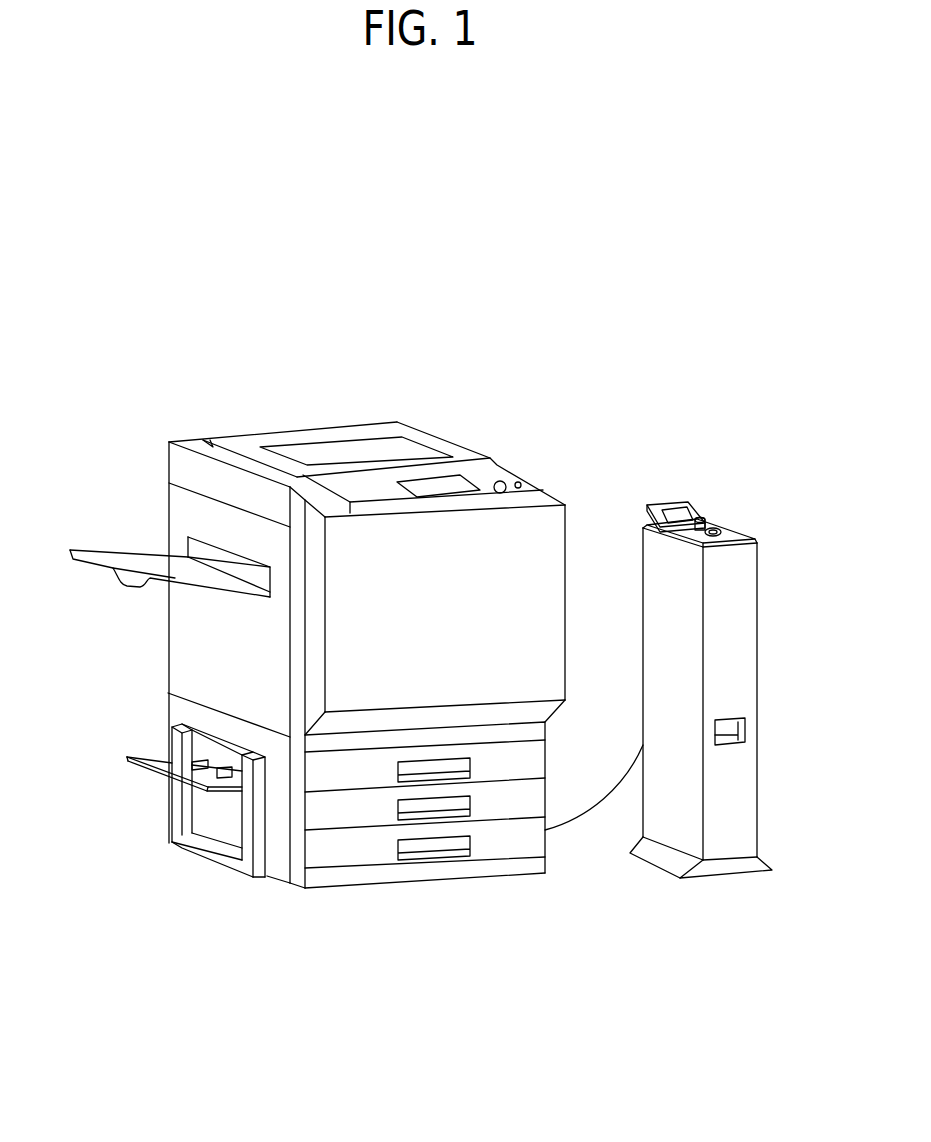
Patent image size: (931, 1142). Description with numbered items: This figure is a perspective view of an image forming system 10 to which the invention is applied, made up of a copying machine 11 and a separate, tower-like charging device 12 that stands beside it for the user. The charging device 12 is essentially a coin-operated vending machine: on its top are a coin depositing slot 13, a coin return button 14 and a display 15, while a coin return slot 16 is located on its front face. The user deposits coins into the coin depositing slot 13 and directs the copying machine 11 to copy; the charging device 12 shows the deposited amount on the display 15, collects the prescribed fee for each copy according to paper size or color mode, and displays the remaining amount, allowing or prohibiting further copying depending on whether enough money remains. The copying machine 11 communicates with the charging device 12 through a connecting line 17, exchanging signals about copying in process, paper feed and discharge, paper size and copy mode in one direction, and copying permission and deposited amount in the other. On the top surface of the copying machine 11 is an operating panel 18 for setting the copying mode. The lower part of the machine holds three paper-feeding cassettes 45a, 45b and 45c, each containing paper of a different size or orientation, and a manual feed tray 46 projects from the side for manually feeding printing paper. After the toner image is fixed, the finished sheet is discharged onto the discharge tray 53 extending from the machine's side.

The image forming system 10 is at (467, 280).
The copying machine 11 is at (413, 356).
The charging device 12 is at (673, 393).
The coin depositing slot 13 is at (718, 533).
The coin return button 14 is at (702, 507).
The display 15 is at (672, 510).
The coin return slot 16 is at (722, 730).
The connecting line 17 is at (585, 823).
The operating panel 18 is at (455, 478).
The paper-feeding cassette 45a is at (545, 753).
The paper-feeding cassette 45b is at (545, 798).
The paper-feeding cassette 45c is at (487, 848).
The manual feed tray 46 is at (157, 755).
The discharge tray 53 is at (160, 573).